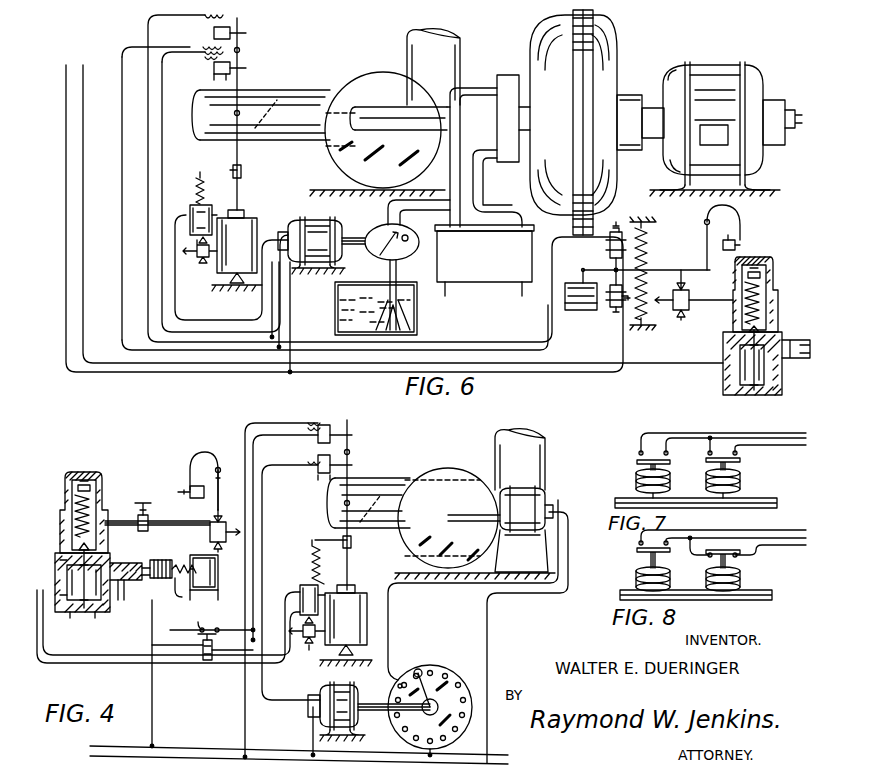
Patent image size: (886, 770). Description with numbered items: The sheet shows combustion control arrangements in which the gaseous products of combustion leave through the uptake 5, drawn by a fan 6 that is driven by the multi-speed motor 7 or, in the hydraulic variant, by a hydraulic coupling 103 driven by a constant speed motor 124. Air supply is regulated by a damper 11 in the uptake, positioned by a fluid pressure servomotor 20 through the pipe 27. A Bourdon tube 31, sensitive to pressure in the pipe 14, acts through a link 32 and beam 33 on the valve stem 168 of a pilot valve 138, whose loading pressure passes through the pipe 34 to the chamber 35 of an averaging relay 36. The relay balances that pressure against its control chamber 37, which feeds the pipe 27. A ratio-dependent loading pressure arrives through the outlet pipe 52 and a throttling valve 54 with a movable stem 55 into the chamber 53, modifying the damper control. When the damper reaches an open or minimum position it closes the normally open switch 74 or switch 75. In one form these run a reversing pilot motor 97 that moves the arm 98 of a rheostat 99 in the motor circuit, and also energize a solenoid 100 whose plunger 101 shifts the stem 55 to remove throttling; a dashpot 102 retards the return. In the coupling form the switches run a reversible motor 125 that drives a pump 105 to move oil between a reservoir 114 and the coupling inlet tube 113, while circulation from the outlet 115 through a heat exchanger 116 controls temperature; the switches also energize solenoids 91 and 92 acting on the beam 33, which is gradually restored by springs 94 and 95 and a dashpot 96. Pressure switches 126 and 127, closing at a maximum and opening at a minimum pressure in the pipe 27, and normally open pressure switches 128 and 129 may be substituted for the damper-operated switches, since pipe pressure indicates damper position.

In FIG. 6, the uptake 5 is at (318, 90).
In FIG. 4, the uptake 5 is at (395, 480).
In FIG. 6, the fan 6 is at (370, 80).
In FIG. 4, the fan 6 is at (460, 468).
In FIG. 4, the multi-speed motor 7 is at (500, 516).
In FIG. 6, the damper 11 is at (272, 98).
In FIG. 4, the damper 11 is at (364, 530).
In FIG. 4, the pipe 14 is at (183, 490).
In FIG. 6, the fluid pressure servomotor 20 is at (226, 231).
In FIG. 4, the fluid pressure servomotor 20 is at (332, 603).
In FIG. 6, the pipe 27 is at (692, 362).
In FIG. 4, the pipe 27 is at (132, 660).
In FIG. 7, the pipe 27 is at (770, 502).
In FIG. 8, the pipe 27 is at (770, 593).
In FIG. 6, the Bourdon tube 31 is at (740, 226).
In FIG. 4, the Bourdon tube 31 is at (209, 454).
In FIG. 6, the link 32 is at (706, 246).
In FIG. 6, the beam 33 is at (664, 258).
In FIG. 4, the pipe 34 is at (196, 518).
In FIG. 6, the chamber 35 is at (738, 320).
In FIG. 4, the chamber 35 is at (70, 532).
In FIG. 6, the averaging relay 36 is at (779, 294).
In FIG. 4, the averaging relay 36 is at (104, 500).
In FIG. 4, the relay chamber 37 is at (92, 620).
In FIG. 4, the outlet pipe 52 is at (124, 598).
In FIG. 4, the chamber 53 is at (60, 574).
In FIG. 4, the throttling valve 54 is at (118, 562).
In FIG. 4, the movable stem 55 is at (134, 580).
In FIG. 6, the switch 74 is at (216, 31).
In FIG. 4, the switch 74 is at (317, 435).
In FIG. 6, the switch 75 is at (214, 70).
In FIG. 4, the switch 75 is at (316, 470).
In FIG. 6, the solenoid 91 is at (608, 246).
In FIG. 6, the solenoid 92 is at (612, 312).
In FIG. 6, the spring 94 is at (646, 256).
In FIG. 6, the spring 95 is at (640, 300).
In FIG. 6, the dashpot arrangement 96 is at (565, 288).
In FIG. 4, the reversing pilot motor 97 is at (340, 686).
In FIG. 4, the movable arm 98 is at (432, 670).
In FIG. 4, the rheostat 99 is at (400, 676).
In FIG. 4, the solenoid 100 is at (154, 562).
In FIG. 4, the plunger 101 is at (187, 584).
In FIG. 4, the dashpot 102 is at (210, 592).
In FIG. 6, the hydraulic coupling 103 is at (607, 40).
In FIG. 6, the pump 105 is at (384, 224).
In FIG. 6, the inlet tube 113 is at (468, 86).
In FIG. 6, the reservoir 114 is at (417, 306).
In FIG. 6, the outlet 115 is at (486, 182).
In FIG. 6, the heat exchanger 116 is at (472, 290).
In FIG. 6, the motor 124 is at (756, 76).
In FIG. 6, the reversible motor 125 is at (314, 222).
In FIG. 7, the pressure switch 126 is at (636, 478).
In FIG. 7, the pressure switch 127 is at (742, 484).
In FIG. 8, the pressure switch 128 is at (638, 574).
In FIG. 8, the pressure switch 129 is at (742, 580).
In FIG. 6, the pilot valve 138 is at (692, 300).
In FIG. 4, the pilot valve 138 is at (208, 530).
In FIG. 4, the valve stem 168 is at (222, 500).